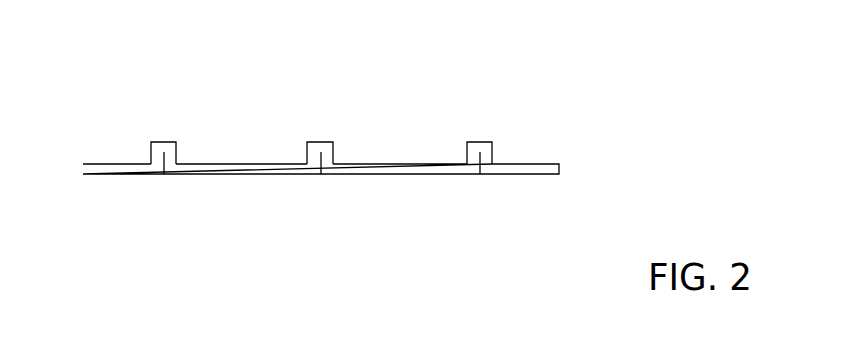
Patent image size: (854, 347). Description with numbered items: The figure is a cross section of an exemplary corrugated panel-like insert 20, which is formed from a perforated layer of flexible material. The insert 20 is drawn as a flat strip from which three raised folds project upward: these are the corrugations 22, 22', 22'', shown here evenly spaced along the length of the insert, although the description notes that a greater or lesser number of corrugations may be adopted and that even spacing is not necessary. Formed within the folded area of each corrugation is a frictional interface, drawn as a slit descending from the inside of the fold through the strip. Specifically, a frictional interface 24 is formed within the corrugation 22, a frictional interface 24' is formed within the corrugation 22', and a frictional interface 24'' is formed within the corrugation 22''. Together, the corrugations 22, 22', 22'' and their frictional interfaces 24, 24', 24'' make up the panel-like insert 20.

The corrugated panel-like insert 20 is at (72, 64).
The corrugation 22 is at (205, 121).
The frictional interface 24 is at (160, 199).
The corrugation 22' is at (359, 120).
The frictional interface 24' is at (323, 199).
The corrugation 22'' is at (517, 116).
The frictional interface 24'' is at (484, 199).